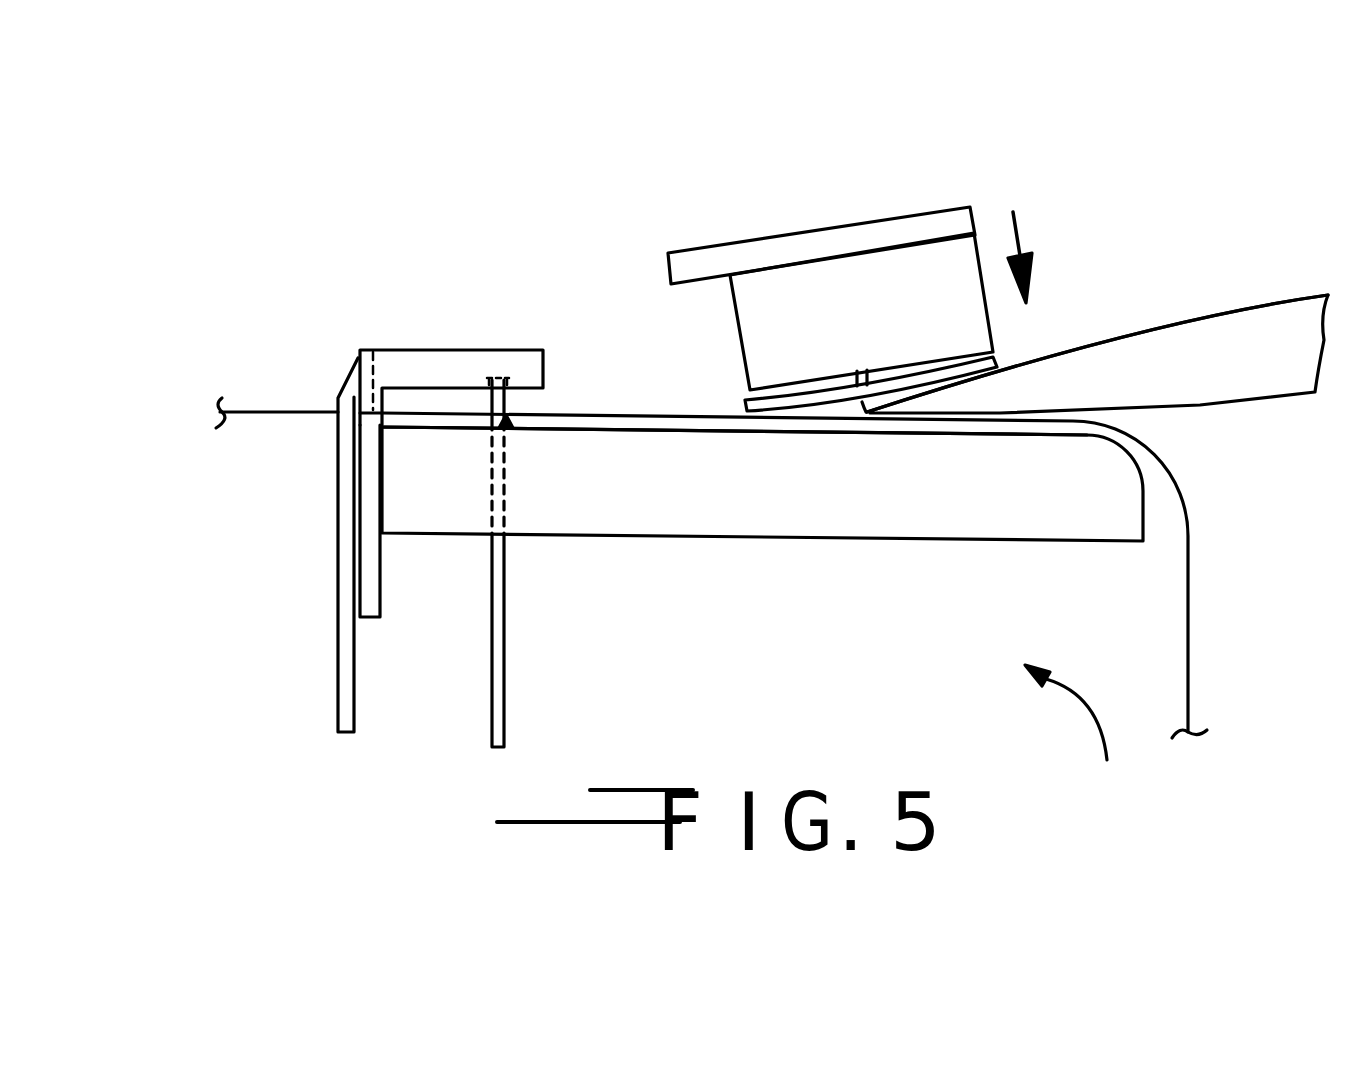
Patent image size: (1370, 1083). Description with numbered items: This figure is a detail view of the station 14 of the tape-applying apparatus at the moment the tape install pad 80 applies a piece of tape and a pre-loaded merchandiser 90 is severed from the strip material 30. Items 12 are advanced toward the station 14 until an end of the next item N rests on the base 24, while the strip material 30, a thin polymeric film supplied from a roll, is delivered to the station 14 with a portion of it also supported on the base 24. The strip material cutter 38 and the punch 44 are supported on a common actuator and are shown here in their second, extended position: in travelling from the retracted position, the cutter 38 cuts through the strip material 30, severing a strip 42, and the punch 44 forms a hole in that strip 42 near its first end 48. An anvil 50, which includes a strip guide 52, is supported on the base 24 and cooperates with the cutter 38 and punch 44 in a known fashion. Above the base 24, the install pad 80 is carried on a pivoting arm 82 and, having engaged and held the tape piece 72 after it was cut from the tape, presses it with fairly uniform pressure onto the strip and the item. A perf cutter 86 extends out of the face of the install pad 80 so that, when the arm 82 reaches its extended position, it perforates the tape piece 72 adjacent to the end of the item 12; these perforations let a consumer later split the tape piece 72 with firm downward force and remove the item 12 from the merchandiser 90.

The item 12 is at (1265, 400).
The station 14 is at (1087, 744).
The base 24 is at (783, 540).
The strip material 30 is at (255, 406).
The strip material cutter 38 is at (337, 662).
The strip 42 is at (600, 411).
The punch 44 is at (503, 627).
The first end 48 is at (405, 405).
The anvil 50 is at (382, 508).
The strip guide 52 is at (373, 343).
The tape piece 72 is at (822, 414).
The tape install pad 80 is at (983, 250).
The arm 82 is at (787, 240).
The perf cutter 86 is at (862, 400).
The merchandiser 90 is at (1188, 627).
The next item N is at (1223, 310).